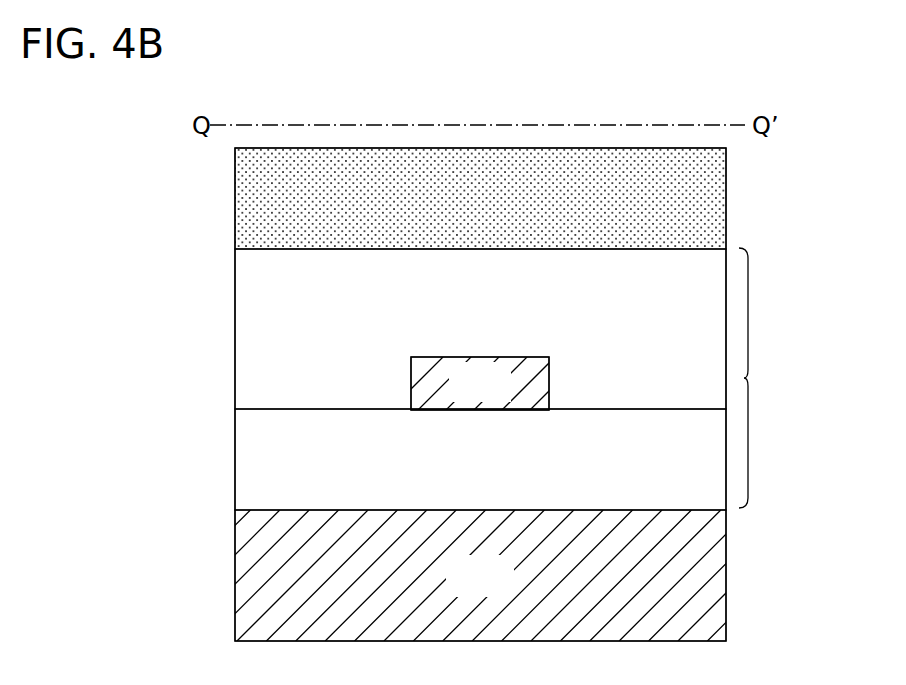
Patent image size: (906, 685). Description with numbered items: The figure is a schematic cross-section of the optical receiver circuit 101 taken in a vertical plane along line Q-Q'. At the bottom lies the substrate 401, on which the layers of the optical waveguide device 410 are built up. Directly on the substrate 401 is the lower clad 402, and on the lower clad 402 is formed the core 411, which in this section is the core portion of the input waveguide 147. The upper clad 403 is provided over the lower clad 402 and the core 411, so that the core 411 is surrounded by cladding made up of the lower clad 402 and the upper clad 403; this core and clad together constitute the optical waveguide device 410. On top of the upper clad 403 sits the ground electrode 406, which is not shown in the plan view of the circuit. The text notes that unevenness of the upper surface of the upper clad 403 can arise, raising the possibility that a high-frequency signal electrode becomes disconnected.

The optical receiver circuit 101 is at (235, 280).
The ground electrode 406 is at (502, 211).
The upper clad 403 is at (502, 319).
The input waveguide 147 is at (502, 397).
The core 411 is at (410, 357).
The lower clad 402 is at (502, 474).
The substrate 401 is at (502, 589).
The optical waveguide device 410 is at (772, 378).